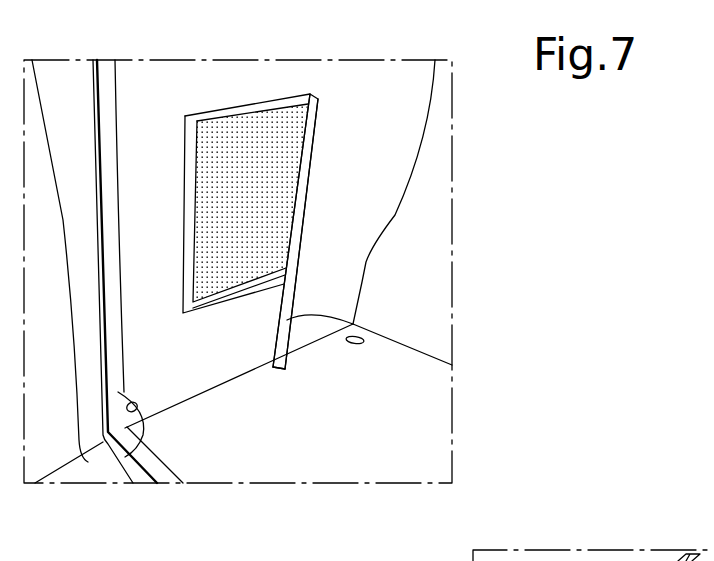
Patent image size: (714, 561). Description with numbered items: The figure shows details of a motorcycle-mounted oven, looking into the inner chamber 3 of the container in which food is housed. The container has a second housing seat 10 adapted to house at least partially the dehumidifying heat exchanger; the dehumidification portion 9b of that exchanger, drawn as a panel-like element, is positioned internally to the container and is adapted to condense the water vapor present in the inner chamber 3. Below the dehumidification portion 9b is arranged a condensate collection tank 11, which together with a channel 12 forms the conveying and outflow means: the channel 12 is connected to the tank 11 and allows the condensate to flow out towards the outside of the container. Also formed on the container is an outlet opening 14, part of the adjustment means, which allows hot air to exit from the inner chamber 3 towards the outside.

The inner chamber 3 is at (367, 434).
The dehumidification portion 9b is at (265, 127).
The second housing seat 10 is at (295, 212).
The condensate collection tank 11 is at (208, 303).
The channel 12 is at (364, 341).
The outlet opening 14 is at (130, 406).